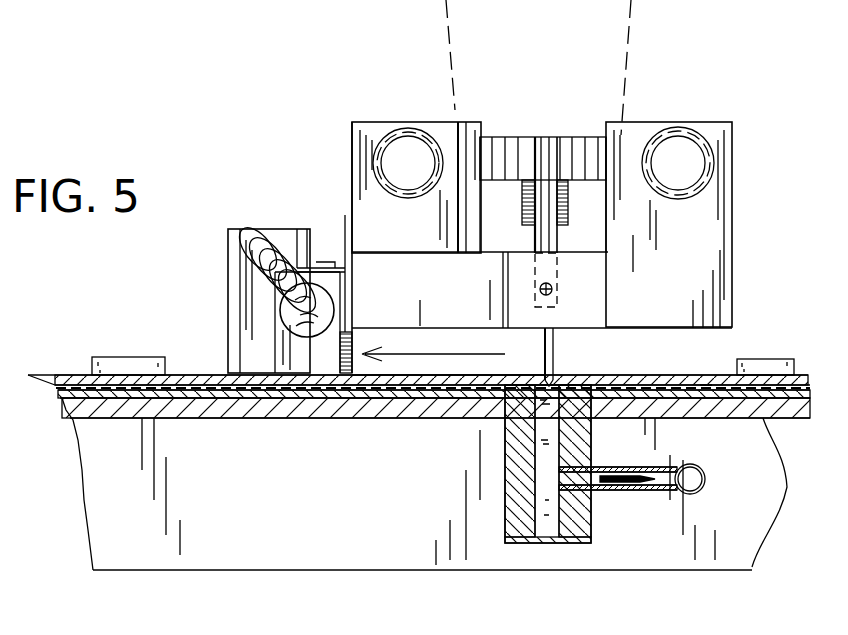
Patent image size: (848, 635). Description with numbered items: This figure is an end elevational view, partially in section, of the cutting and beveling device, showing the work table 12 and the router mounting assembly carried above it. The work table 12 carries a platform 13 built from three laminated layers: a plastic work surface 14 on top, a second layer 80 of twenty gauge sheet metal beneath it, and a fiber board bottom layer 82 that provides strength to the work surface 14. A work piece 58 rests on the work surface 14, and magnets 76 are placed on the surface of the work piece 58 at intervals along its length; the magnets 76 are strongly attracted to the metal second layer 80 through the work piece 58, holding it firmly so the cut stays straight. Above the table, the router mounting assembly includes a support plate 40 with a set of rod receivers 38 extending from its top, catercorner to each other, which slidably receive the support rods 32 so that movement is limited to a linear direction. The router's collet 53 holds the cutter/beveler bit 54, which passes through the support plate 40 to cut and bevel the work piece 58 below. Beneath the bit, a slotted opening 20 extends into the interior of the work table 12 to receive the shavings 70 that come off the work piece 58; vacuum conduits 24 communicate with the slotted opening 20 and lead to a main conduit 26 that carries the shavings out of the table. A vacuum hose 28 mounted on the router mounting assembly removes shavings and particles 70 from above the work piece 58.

The work table 12 is at (28, 417).
The platform 13 is at (63, 417).
The work surface 14 is at (817, 387).
The slotted opening 20 is at (543, 443).
The vacuum conduits 24 is at (633, 483).
The main conduit 26 is at (699, 492).
The vacuum hose 28 is at (262, 237).
The support rods 32 is at (683, 155).
The rod receivers 38 is at (351, 132).
The support plate 40 is at (370, 282).
The collet 53 is at (573, 194).
The cutter/beveler bit 54 is at (553, 347).
The work piece 58 is at (705, 382).
The shavings 70 is at (555, 490).
The magnets 76 is at (123, 360).
The second layer 80 is at (813, 398).
The bottom layer 82 is at (787, 487).